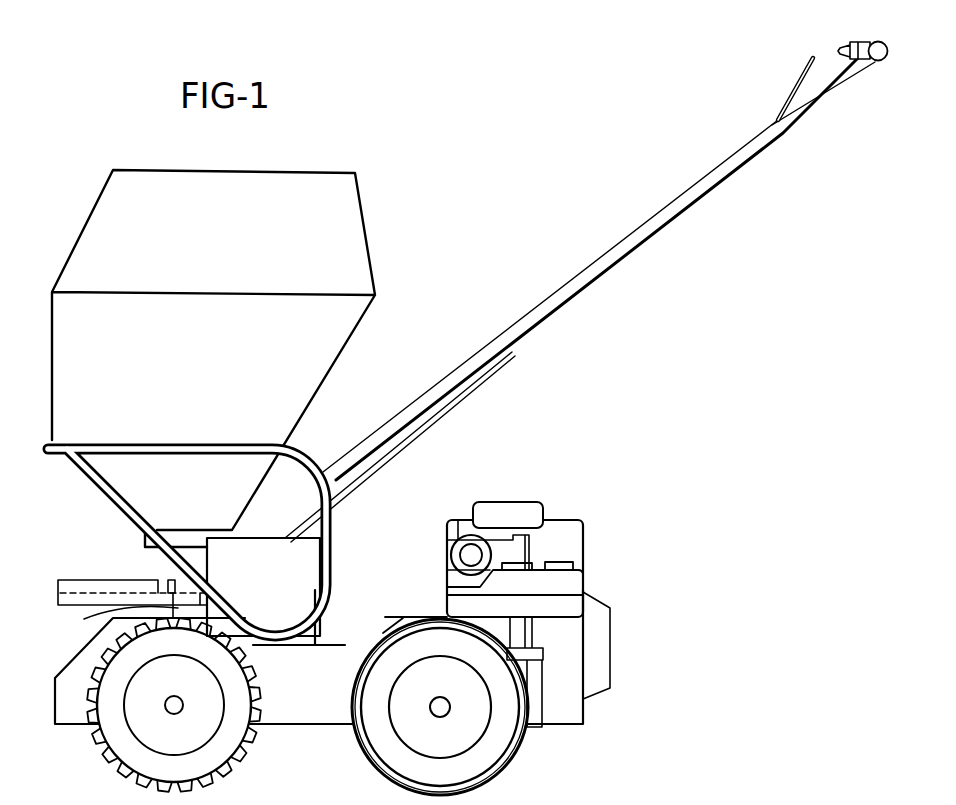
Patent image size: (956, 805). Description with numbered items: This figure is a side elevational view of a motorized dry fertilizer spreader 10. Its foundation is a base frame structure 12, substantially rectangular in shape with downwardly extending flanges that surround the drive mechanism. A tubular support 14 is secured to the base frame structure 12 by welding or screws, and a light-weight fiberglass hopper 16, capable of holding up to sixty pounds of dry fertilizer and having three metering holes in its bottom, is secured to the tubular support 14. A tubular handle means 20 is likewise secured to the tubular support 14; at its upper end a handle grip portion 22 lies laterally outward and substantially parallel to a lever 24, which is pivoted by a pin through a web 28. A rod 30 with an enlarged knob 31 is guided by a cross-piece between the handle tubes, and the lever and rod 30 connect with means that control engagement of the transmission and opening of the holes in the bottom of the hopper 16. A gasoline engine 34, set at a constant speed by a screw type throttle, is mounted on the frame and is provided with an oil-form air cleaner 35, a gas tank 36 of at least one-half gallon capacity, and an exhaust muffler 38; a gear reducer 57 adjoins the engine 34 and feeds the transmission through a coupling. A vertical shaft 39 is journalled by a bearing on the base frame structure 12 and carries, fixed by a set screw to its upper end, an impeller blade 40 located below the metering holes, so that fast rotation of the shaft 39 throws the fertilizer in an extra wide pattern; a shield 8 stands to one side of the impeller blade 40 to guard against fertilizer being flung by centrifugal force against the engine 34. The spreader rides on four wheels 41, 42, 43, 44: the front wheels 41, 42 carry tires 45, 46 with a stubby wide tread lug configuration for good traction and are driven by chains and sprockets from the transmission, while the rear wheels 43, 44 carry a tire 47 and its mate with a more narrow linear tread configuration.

The shield 8 is at (258, 547).
The motorized fertilizer spreader 10 is at (433, 298).
The base frame structure 12 is at (73, 652).
The tubular support 14 is at (333, 569).
The hopper 16 is at (362, 225).
The tubular handle means 20 is at (655, 229).
The handle grip portion 22 is at (881, 62).
The lever 24 is at (849, 45).
The web 28 is at (863, 78).
The rod 30 is at (449, 413).
The enlarged knob 31 is at (806, 62).
The gasoline engine 34 is at (448, 545).
The oil-form air cleaner 35 is at (512, 508).
The gas tank 36 is at (568, 585).
The exhaust muffler 38 is at (463, 556).
The vertical shaft 39 is at (92, 619).
The impeller blade 40 is at (97, 579).
The wheel 41 is at (137, 722).
The wheel 42 is at (168, 793).
The wheel 43 is at (470, 722).
The wheel 44 is at (455, 796).
The tire 45 is at (237, 765).
The tire 46 is at (364, 756).
The tire 47 is at (498, 770).
The gear reducer 57 is at (407, 608).